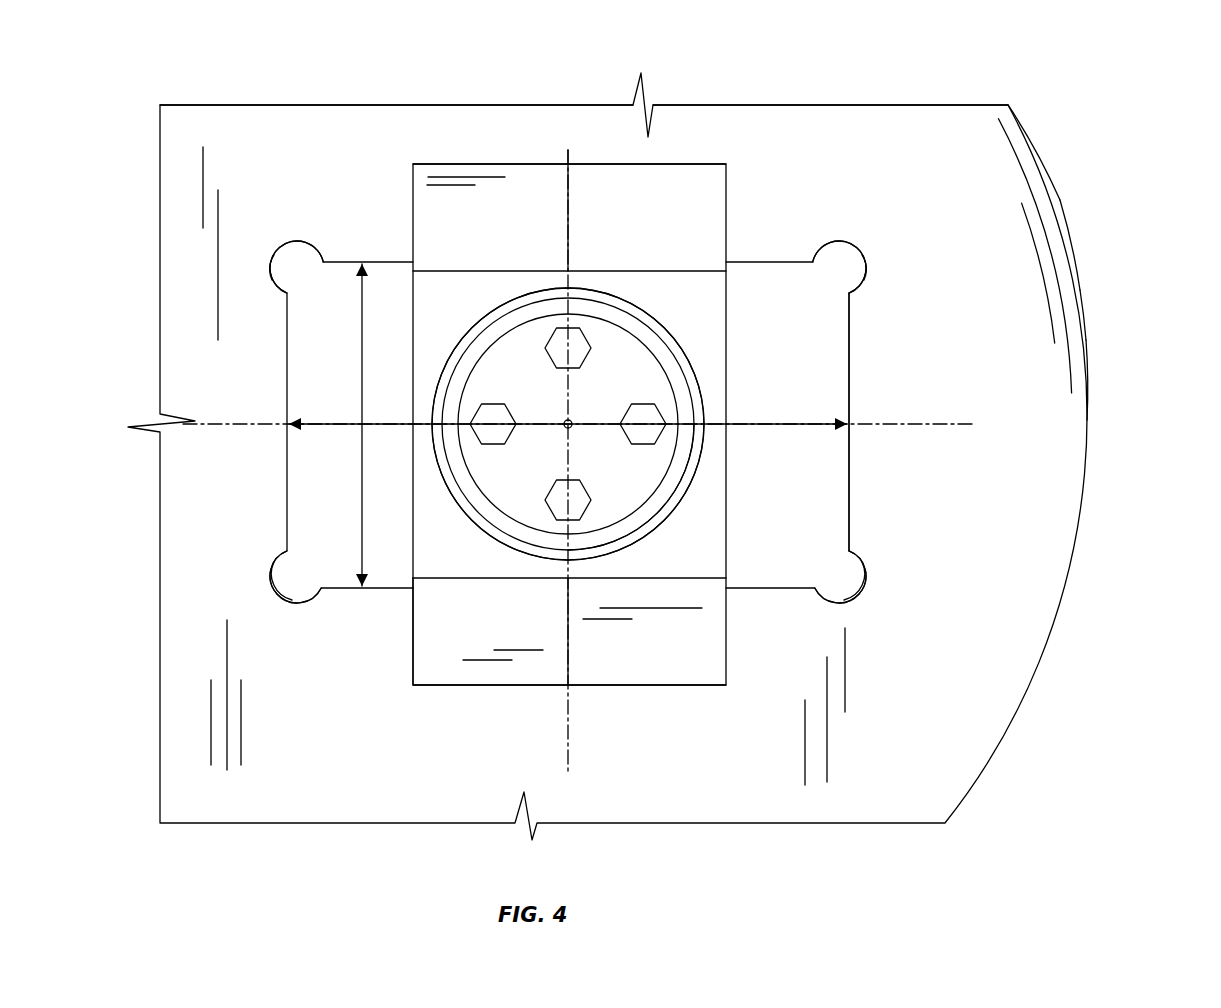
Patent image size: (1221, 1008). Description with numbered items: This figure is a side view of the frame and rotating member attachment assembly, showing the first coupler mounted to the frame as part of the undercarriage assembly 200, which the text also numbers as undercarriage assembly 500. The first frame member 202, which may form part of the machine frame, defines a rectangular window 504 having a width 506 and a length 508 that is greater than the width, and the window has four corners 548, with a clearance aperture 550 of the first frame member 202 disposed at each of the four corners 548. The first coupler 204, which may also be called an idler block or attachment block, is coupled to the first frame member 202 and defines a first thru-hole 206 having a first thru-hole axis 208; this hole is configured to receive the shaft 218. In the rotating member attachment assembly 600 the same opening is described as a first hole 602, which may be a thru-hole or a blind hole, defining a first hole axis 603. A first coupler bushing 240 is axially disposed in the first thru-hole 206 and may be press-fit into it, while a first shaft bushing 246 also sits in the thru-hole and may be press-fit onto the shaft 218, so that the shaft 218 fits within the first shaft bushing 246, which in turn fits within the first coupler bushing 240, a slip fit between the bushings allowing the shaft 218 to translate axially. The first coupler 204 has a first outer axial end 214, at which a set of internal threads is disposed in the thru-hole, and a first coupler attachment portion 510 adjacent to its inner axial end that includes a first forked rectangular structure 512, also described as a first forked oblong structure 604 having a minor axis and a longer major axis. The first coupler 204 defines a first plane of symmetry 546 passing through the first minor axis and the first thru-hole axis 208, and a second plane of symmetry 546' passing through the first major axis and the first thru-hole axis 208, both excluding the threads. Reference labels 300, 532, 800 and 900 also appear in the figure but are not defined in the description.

The undercarriage assembly 200 is at (773, 103).
The first frame member 202 is at (958, 676).
The first coupler 204 is at (683, 658).
The first thru-hole 206 is at (525, 337).
The first thru-hole axis 208 is at (570, 422).
The first outer axial end 214 is at (458, 556).
The shaft 218 is at (672, 340).
The first coupler bushing 240 is at (684, 477).
The first shaft bushing 246 is at (480, 487).
The assembly 300 is at (887, 103).
The undercarriage assembly 500 is at (1052, 158).
The rectangular window 504 is at (837, 510).
The width 506 is at (350, 548).
The length 508 is at (802, 420).
The first coupler attachment portion 510 is at (523, 160).
The first forked rectangular structure 512 is at (574, 156).
The plate lower right portion 532 is at (704, 553).
The first plane of symmetry 546 is at (616, 400).
The second plane of symmetry 546' is at (616, 474).
The corners 548 is at (318, 265).
The clearance aperture 550 is at (276, 270).
The rotating member attachment assembly 600 is at (1069, 229).
The first hole 602 is at (568, 424).
The first hole axis 603 is at (570, 426).
The first forked oblong structure 604 is at (682, 160).
The wall layer 800 is at (1089, 319).
The wall edge 900 is at (1091, 362).